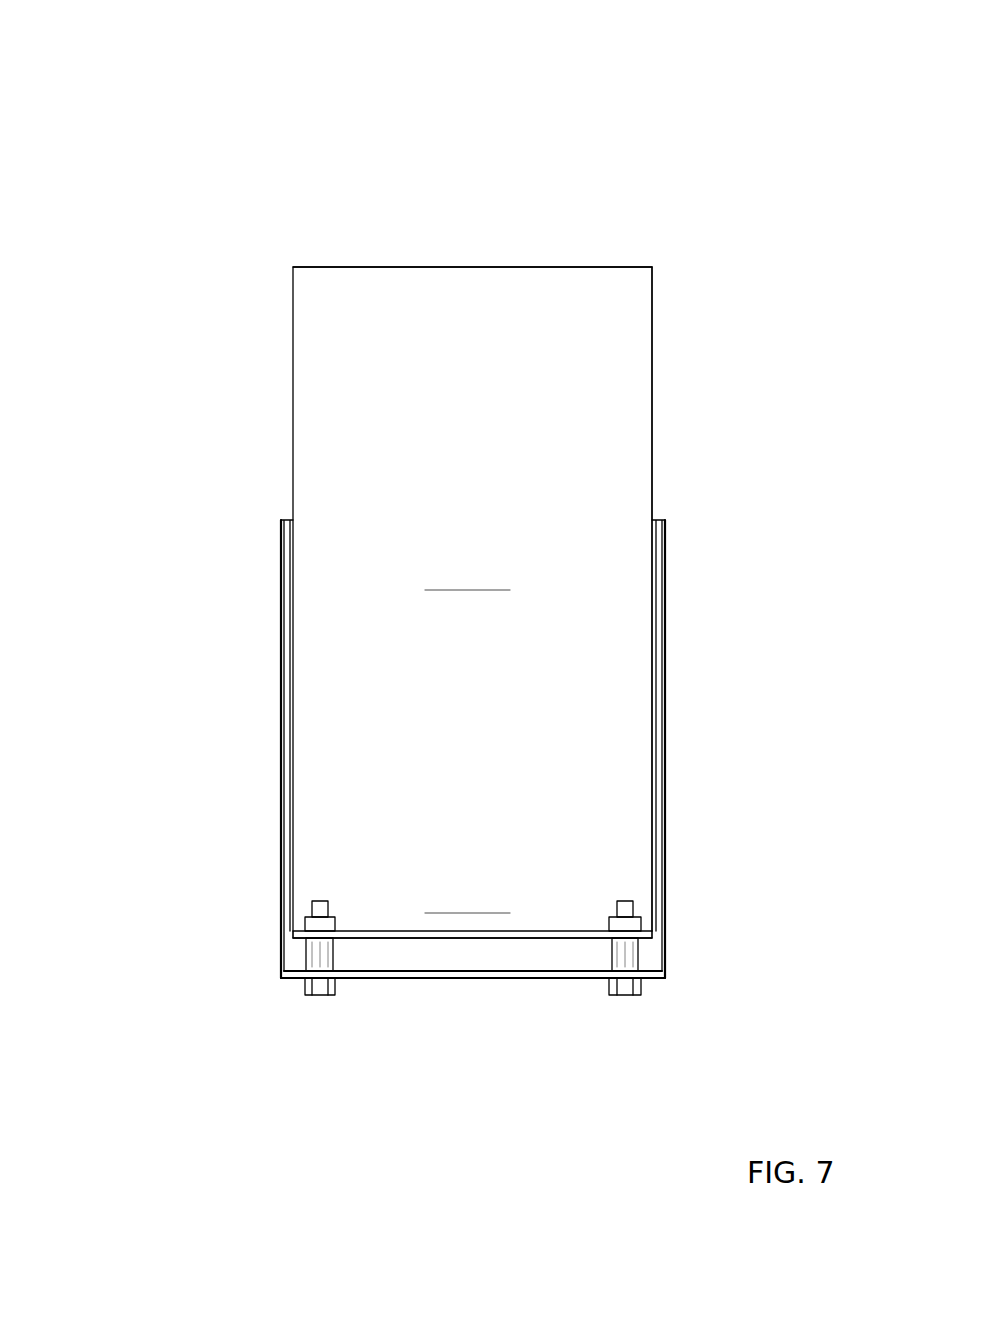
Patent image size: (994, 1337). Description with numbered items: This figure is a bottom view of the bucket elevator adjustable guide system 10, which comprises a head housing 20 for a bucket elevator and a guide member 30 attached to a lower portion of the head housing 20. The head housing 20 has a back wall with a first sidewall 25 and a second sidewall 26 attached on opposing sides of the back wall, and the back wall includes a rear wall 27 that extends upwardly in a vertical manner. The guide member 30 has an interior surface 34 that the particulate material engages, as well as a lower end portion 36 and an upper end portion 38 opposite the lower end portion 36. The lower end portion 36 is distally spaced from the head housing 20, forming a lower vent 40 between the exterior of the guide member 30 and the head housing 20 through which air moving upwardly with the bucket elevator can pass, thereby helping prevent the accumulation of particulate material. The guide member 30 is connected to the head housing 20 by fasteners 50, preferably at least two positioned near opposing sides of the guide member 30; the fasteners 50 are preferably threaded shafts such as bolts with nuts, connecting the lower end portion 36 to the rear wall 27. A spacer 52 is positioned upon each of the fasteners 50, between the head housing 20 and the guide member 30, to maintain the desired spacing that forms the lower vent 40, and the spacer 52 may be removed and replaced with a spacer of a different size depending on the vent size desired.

The bucket elevator adjustable guide system 10 is at (140, 124).
The head housing 20 is at (464, 823).
The first sidewall 25 is at (281, 704).
The second sidewall 26 is at (663, 704).
The rear wall 27 is at (523, 978).
The guide member 30 is at (285, 342).
The interior surface 34 is at (575, 352).
The lower end portion 36 is at (570, 931).
The upper end portion 38 is at (562, 267).
The lower vent 40 is at (486, 953).
The fasteners 50 is at (318, 995).
The spacer 52 is at (306, 955).